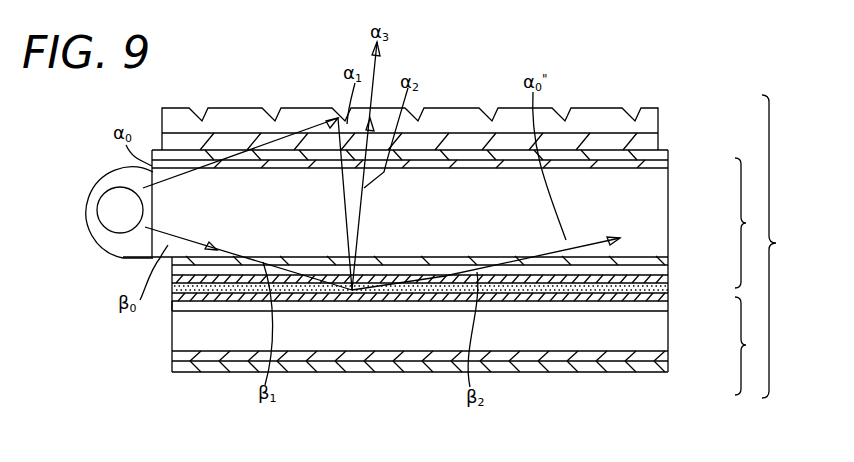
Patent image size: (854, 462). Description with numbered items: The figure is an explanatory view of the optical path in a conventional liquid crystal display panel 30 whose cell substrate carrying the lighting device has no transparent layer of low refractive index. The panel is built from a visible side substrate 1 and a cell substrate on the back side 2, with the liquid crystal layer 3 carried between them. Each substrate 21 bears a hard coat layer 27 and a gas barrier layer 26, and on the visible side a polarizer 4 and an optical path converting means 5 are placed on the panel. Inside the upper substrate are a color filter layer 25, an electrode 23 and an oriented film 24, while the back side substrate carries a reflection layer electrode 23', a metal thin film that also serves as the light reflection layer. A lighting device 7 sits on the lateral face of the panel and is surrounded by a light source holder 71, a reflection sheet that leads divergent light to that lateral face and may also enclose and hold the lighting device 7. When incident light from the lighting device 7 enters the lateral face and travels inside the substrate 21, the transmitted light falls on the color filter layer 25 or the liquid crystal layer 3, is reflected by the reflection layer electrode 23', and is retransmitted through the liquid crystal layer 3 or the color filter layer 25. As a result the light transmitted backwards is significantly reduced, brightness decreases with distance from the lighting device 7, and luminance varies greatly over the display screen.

The optical path converting means 5 is at (660, 115).
The polarizer 4 is at (660, 140).
The hard coat layer 27 is at (670, 153).
The gas barrier layer 26 is at (670, 166).
The substrate 21 is at (670, 207).
The color filter layer 25 is at (670, 261).
The electrode 23 is at (451, 268).
The oriented film 24 is at (670, 288).
The reflection layer electrode 23' is at (454, 318).
The visible side substrate 1 is at (747, 223).
The cell substrate on the back side 2 is at (747, 346).
The liquid crystal display panel 30 is at (783, 246).
The light source holder 71 is at (98, 169).
The lighting device 7 is at (108, 206).
The liquid crystal layer 3 is at (531, 288).